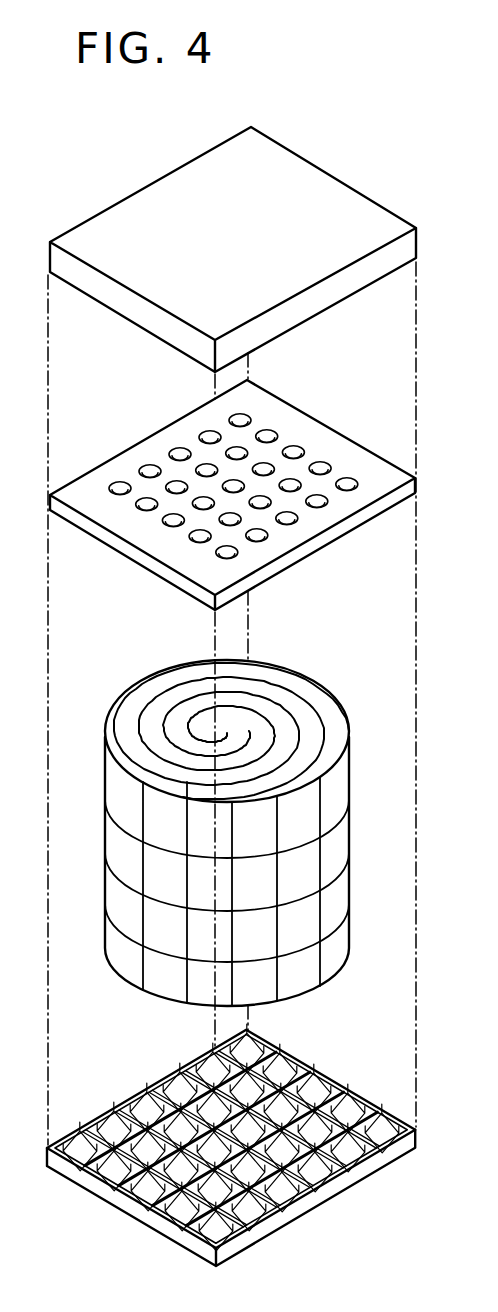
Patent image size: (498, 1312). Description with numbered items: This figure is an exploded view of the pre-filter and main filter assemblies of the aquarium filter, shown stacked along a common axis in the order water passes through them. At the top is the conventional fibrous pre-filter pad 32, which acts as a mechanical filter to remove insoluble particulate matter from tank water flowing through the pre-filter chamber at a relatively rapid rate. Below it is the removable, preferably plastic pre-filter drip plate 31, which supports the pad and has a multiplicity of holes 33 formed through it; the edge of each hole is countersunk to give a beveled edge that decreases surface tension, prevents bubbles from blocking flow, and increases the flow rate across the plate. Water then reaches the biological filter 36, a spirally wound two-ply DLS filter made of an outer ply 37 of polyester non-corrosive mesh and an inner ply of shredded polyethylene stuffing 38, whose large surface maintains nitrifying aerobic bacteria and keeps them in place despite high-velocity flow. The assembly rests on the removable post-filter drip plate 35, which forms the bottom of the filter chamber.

The pre-filter drip plate 31 is at (365, 458).
The fibrous pre-filter pad 32 is at (393, 214).
The holes 33 is at (207, 431).
The post-filter drip plate 35 is at (390, 1160).
The biological filter 36 is at (355, 879).
The outer ply 37 is at (203, 720).
The inner ply of shredded polyethylene stuffing 38 is at (348, 724).